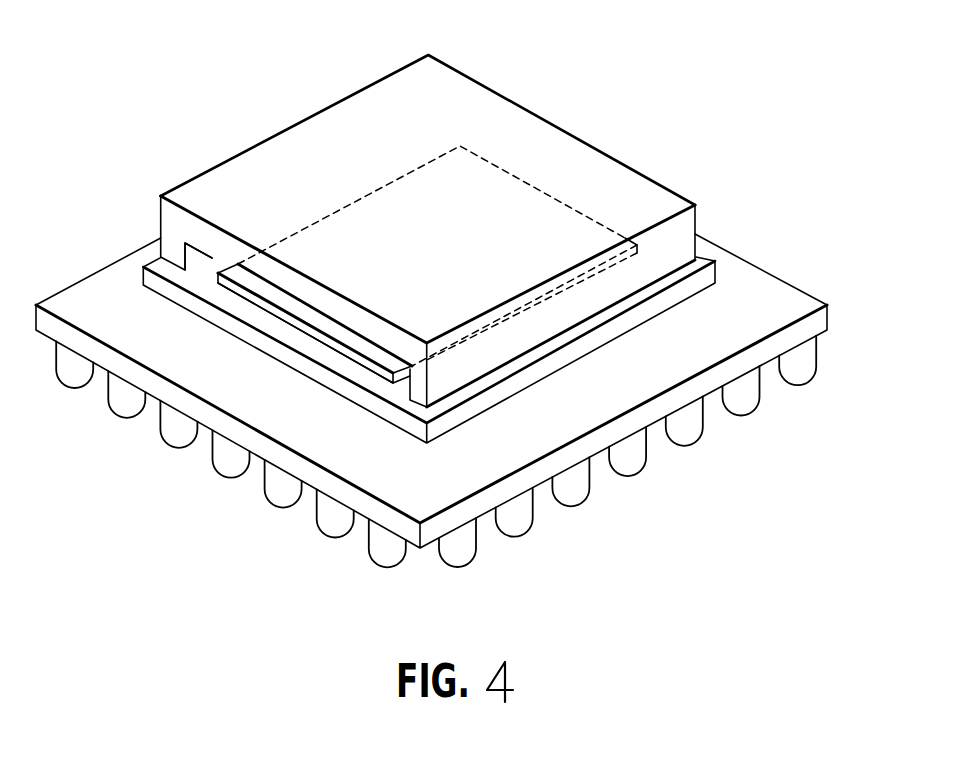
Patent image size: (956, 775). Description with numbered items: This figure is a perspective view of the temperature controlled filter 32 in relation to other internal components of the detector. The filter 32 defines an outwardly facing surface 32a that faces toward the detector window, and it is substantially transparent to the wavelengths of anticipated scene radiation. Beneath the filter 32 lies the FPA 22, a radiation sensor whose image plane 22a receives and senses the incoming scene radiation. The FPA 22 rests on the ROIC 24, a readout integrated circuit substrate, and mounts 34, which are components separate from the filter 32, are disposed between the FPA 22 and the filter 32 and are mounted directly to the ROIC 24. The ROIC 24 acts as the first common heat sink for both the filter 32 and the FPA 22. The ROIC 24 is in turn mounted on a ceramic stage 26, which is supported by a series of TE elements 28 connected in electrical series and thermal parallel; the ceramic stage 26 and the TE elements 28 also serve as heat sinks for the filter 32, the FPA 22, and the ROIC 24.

The FPA 22 is at (238, 290).
The image plane 22a is at (287, 312).
The ROIC 24 is at (713, 282).
The ceramic stage 26 is at (793, 337).
The TE elements 28 is at (628, 458).
The temperature controlled filter 32 is at (662, 204).
The outwardly facing surface 32a is at (540, 147).
The mounts 34 is at (177, 242).